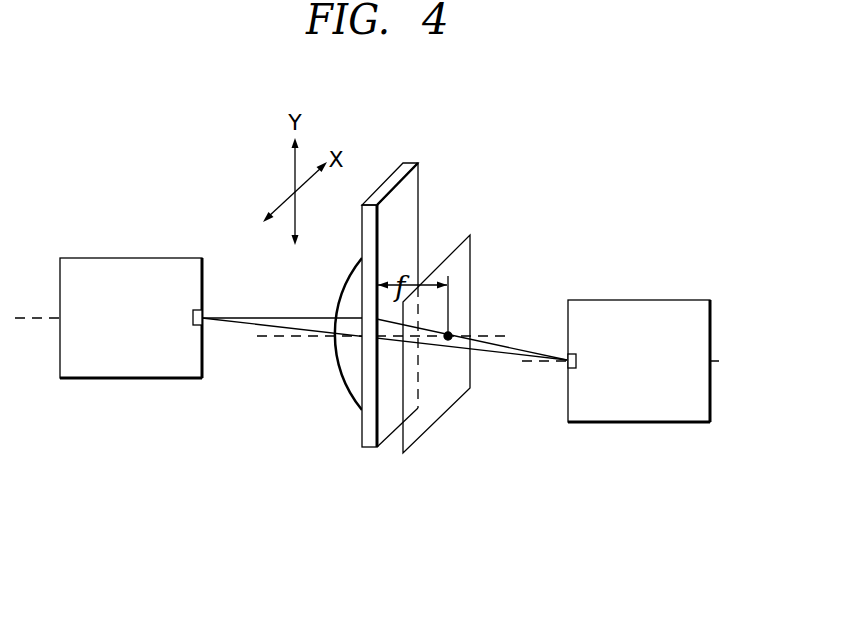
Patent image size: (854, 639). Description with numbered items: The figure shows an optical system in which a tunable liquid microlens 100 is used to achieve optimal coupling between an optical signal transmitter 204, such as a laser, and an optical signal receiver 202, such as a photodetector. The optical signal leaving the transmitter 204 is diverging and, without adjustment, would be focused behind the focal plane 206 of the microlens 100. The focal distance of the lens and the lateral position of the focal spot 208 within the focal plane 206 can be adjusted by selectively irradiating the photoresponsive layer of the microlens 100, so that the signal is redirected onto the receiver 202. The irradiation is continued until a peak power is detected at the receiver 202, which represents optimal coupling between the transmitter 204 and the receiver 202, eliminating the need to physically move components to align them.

The microlens 100 is at (338, 395).
The optical signal receiver 202 is at (670, 300).
The optical signal transmitter 204 is at (106, 257).
The focal plane 206 is at (470, 258).
The focal spot 208 is at (452, 334).